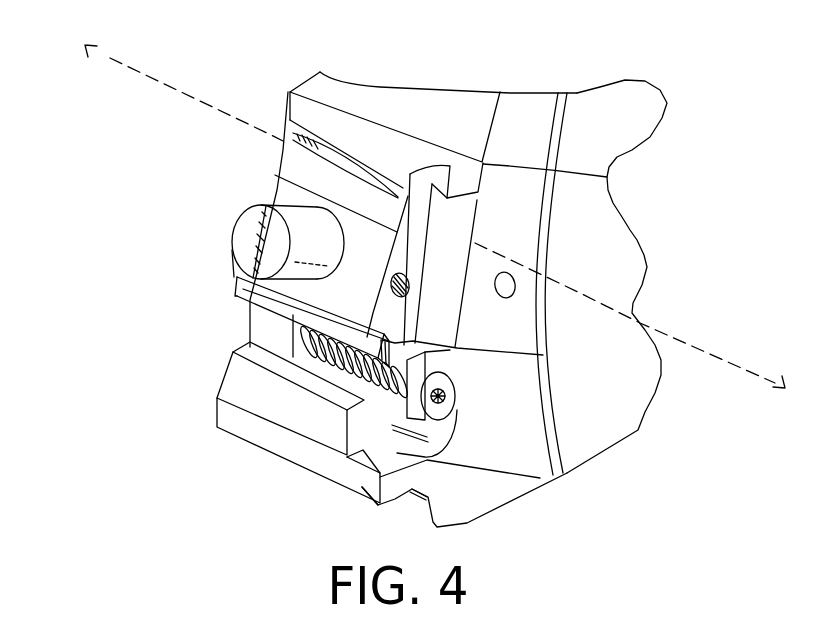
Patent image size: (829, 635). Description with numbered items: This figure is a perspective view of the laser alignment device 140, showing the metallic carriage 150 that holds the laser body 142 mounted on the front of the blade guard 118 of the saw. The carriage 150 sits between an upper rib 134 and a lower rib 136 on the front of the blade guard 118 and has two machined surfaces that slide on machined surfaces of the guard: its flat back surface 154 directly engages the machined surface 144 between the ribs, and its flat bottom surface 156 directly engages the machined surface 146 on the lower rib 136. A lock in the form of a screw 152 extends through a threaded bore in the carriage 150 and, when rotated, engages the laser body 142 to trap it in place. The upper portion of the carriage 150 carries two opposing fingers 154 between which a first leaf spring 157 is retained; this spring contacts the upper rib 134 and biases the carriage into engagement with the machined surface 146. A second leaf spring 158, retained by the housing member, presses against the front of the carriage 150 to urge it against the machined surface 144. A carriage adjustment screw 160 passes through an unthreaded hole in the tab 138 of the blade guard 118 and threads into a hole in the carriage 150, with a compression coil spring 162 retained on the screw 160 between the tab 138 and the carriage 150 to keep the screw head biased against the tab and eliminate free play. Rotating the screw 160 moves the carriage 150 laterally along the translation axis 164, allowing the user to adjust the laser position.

The blade guard 118 is at (528, 112).
The upper rib 134 is at (312, 84).
The lower rib 136 is at (243, 427).
The tab 138 is at (545, 355).
The laser alignment device 140 is at (165, 400).
The laser body 142 is at (249, 230).
The machined surface 144 is at (447, 244).
The machined surface 146 is at (398, 464).
The carriage 150 is at (231, 363).
The screw 152 is at (410, 280).
The flat back surface 154 is at (290, 126).
The flat bottom surface 156 is at (363, 459).
The first leaf spring 157 is at (395, 166).
The second leaf spring 158 is at (250, 285).
The screw 160 is at (456, 387).
The compression coil spring 162 is at (320, 363).
The translation axis 164 is at (138, 73).